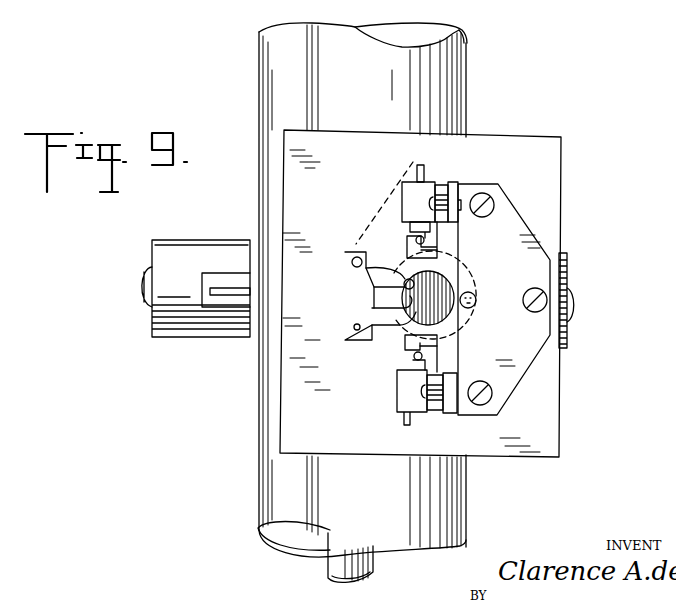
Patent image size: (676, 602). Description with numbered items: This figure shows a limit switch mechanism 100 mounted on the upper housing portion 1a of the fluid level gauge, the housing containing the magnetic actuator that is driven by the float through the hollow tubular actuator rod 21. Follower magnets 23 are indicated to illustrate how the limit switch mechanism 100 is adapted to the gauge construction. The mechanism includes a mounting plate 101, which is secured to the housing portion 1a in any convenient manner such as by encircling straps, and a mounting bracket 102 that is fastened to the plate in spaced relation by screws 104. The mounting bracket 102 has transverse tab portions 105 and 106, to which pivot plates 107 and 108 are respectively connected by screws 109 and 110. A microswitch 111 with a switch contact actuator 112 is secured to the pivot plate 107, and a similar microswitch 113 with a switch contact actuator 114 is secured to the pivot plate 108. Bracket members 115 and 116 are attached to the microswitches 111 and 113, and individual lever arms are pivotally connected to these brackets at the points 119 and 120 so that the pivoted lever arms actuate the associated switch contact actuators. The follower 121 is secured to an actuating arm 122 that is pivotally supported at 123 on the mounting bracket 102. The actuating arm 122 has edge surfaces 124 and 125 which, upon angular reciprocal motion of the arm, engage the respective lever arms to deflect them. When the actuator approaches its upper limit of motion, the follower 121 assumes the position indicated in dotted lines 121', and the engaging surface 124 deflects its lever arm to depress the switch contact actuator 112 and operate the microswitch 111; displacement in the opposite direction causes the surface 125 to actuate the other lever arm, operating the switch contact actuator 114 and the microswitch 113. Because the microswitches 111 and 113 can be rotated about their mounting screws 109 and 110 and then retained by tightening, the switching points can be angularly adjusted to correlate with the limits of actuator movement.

The upper housing portion 1a is at (466, 75).
The hollow tubular actuator rod 21 is at (373, 572).
The follower magnets 23 is at (172, 330).
The limit switch mechanism 100 is at (587, 165).
The mounting plate 101 is at (495, 137).
The mounting bracket 102 is at (545, 237).
The screws 104 is at (493, 205).
The transverse tab portion 105 is at (465, 183).
The transverse tab portion 106 is at (462, 407).
The pivot plate 107 is at (442, 182).
The pivot plate 108 is at (435, 412).
The screw 109 is at (412, 176).
The screw 110 is at (422, 385).
The microswitch 111 is at (400, 190).
The switch contact actuator 112 is at (440, 238).
The microswitch 113 is at (400, 405).
The switch contact actuator 114 is at (410, 357).
The bracket member 115 is at (455, 268).
The bracket member 116 is at (440, 337).
The pivot point 119 is at (440, 250).
The pivot point 120 is at (440, 360).
The follower 121 is at (339, 296).
The follower dotted-line position 121' is at (358, 203).
The actuating arm 122 is at (383, 295).
The pivot 123 is at (477, 300).
The edge surface 124 is at (390, 278).
The edge surface 125 is at (398, 316).